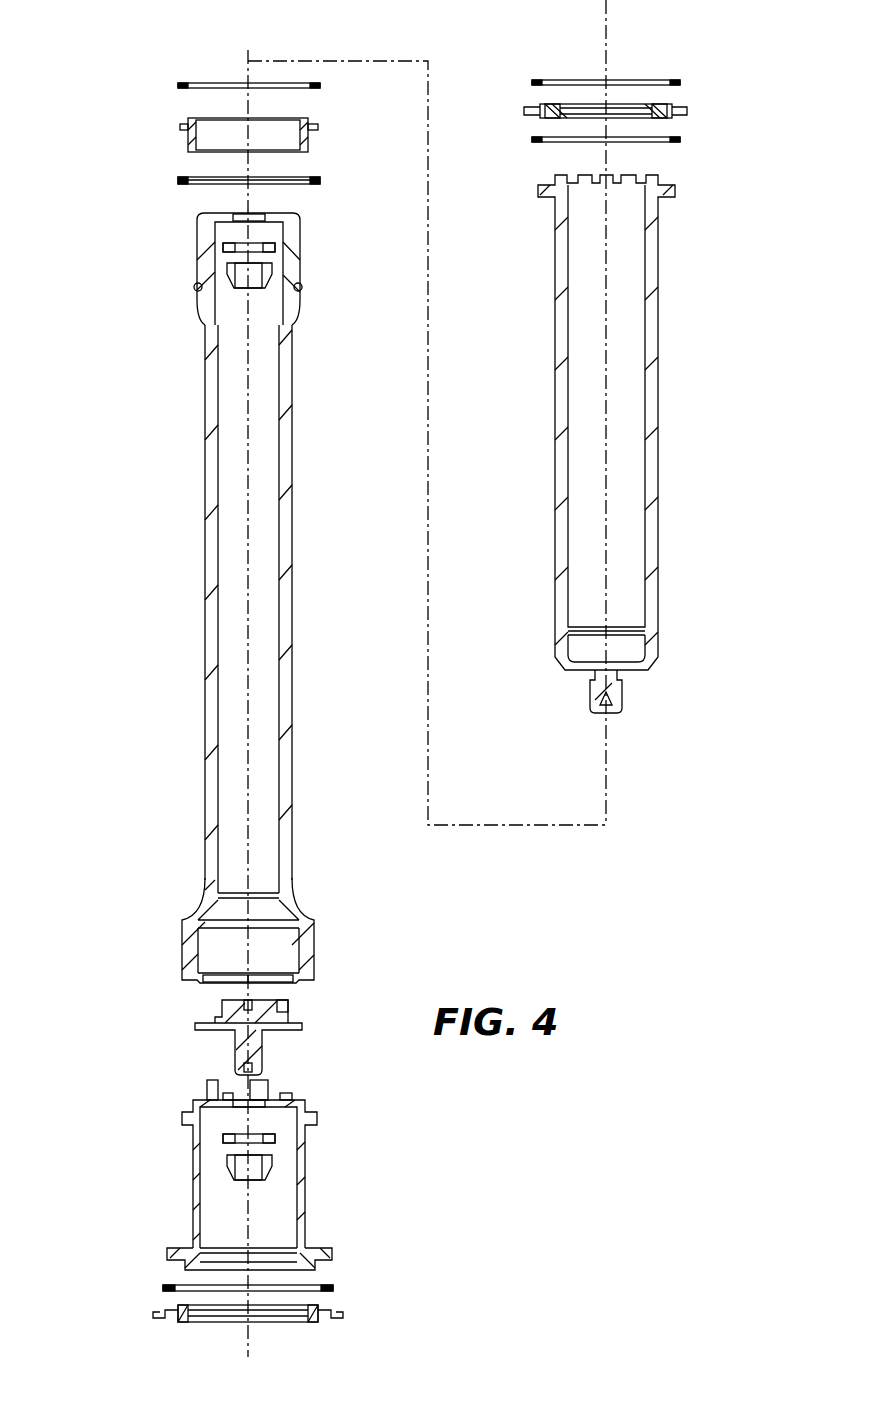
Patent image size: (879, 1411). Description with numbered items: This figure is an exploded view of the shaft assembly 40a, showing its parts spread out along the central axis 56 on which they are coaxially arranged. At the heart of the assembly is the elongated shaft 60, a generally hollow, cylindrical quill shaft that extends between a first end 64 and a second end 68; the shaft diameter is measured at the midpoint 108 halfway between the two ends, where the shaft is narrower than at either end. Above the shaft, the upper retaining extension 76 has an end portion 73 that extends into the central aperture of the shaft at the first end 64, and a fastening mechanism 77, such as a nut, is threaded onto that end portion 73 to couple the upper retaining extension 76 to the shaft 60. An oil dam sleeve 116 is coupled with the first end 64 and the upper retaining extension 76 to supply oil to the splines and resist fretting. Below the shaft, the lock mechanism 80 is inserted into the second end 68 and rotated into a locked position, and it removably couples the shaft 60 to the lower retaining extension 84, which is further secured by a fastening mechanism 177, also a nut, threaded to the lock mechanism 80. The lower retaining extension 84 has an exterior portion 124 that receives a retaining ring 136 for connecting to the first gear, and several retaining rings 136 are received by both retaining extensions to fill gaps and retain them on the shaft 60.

The shaft assembly 40a is at (128, 60).
The oil dam sleeve 116 is at (188, 135).
The retaining ring 136 is at (178, 180).
The first end 64 is at (181, 243).
The fastening mechanism 77 is at (238, 283).
The shaft 60 is at (208, 535).
The midpoint 108 is at (238, 647).
The second end 68 is at (176, 900).
The lock mechanism 80 is at (232, 1038).
The lower retaining extension 84 is at (193, 1158).
The fastening mechanism 177 is at (232, 1178).
The exterior portion 124 is at (158, 1272).
The central axis 56 is at (606, 46).
The upper retaining extension 76 is at (650, 357).
The end portion 73 is at (618, 693).